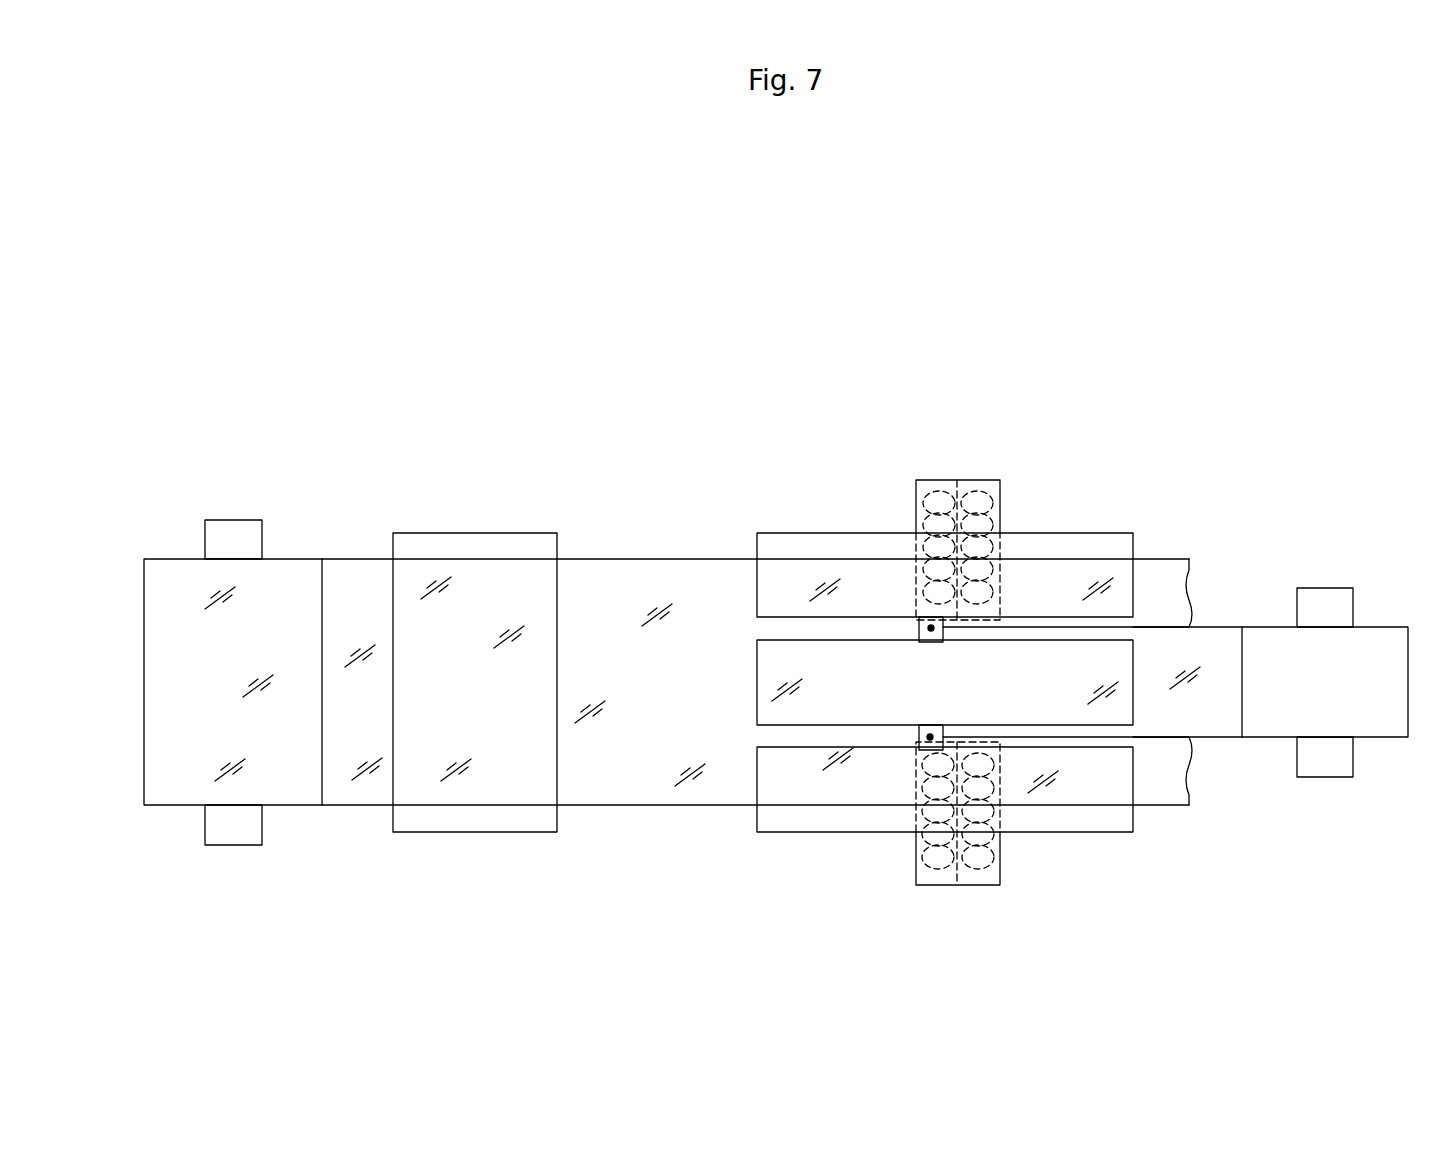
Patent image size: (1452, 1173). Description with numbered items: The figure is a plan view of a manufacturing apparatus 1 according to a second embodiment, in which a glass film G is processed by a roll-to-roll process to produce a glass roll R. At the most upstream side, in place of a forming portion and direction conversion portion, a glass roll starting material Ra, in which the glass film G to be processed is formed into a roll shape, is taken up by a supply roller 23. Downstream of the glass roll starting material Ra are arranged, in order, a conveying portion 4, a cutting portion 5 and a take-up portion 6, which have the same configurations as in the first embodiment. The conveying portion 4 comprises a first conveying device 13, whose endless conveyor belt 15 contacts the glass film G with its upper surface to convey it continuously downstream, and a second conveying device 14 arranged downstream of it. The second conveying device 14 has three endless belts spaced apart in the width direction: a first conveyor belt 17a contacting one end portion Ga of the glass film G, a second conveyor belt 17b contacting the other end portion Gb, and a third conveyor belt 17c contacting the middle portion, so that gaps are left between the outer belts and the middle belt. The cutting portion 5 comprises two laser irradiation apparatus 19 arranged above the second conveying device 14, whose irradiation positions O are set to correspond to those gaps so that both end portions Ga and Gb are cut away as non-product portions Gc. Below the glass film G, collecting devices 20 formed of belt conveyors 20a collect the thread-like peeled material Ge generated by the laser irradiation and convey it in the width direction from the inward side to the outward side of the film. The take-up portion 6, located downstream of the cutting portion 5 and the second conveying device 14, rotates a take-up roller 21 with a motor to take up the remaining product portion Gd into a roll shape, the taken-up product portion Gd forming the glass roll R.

The manufacturing apparatus 1 is at (865, 552).
The conveying portion 4 is at (475, 757).
The cutting portion 5 is at (963, 688).
The take-up portion 6 is at (1336, 638).
The first conveying device 13 is at (475, 757).
The second conveying device 14 is at (919, 712).
The conveyor belt 15 is at (548, 894).
The first conveyor belt 17a is at (757, 815).
The second conveyor belt 17b is at (800, 533).
The third conveyor belt 17c is at (757, 686).
The laser irradiation apparatus 19 is at (919, 627).
The collecting device 20 is at (963, 688).
The belt conveyor 20a is at (986, 480).
The take-up roller 21 is at (1350, 757).
The supply roller 23 is at (236, 530).
The glass film G is at (643, 590).
The one end portion Ga is at (628, 805).
The other end portion Gb is at (600, 559).
The non-product portion Gc is at (1161, 575).
The product portion Gd is at (1216, 640).
The thread-like peeled material Ge is at (991, 677).
The irradiation position O is at (931, 628).
The glass roll R is at (1270, 725).
The glass roll starting material Ra is at (168, 556).